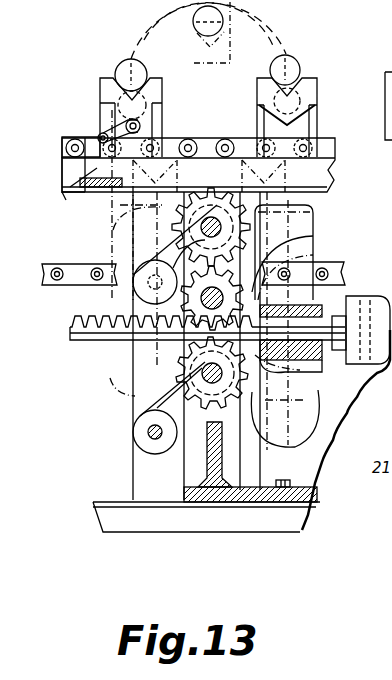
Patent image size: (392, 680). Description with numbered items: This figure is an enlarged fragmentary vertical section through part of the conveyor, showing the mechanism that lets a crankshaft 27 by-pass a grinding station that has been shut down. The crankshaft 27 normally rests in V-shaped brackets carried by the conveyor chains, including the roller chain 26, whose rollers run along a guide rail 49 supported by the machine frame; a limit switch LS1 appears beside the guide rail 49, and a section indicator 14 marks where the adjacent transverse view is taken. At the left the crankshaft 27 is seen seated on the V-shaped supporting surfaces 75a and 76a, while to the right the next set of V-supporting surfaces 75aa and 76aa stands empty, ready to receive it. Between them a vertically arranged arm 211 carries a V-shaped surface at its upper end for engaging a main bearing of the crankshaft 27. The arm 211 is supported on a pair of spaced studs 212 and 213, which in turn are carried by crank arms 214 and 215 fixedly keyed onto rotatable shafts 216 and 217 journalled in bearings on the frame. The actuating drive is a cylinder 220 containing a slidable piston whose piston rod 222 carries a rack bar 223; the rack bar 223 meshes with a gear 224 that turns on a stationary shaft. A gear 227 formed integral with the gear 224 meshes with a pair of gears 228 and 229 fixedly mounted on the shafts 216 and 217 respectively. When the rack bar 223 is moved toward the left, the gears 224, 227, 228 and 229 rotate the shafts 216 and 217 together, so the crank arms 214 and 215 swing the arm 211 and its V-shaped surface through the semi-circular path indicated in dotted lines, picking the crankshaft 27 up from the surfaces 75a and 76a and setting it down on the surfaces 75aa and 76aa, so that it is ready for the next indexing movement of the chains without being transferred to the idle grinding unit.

The section line 14 is at (192, 80).
The crankshaft 27 is at (128, 62).
The V-shaped supporting surface 75a is at (112, 88).
The V-shaped supporting surface 76a is at (112, 112).
The V-supporting surface 75aa is at (300, 68).
The V-supporting surface 76aa is at (308, 117).
The roller chain 26 is at (72, 140).
The guide rail 49 is at (67, 177).
The limit switch LS1 is at (46, 204).
The vertically arranged arm 211 is at (137, 223).
The stud 212 is at (140, 280).
The crank arm 214 is at (142, 262).
The rotatable shaft 216 is at (217, 217).
The rotatable shaft 217 is at (190, 372).
The rack bar 223 is at (97, 317).
The piston rod 222 is at (88, 334).
The gear 224 is at (250, 298).
The gear 228 is at (300, 207).
The gear 227 is at (303, 238).
The cylinder 220 is at (375, 365).
The gear 229 is at (283, 402).
The stud 213 is at (150, 436).
The crank arm 215 is at (160, 412).